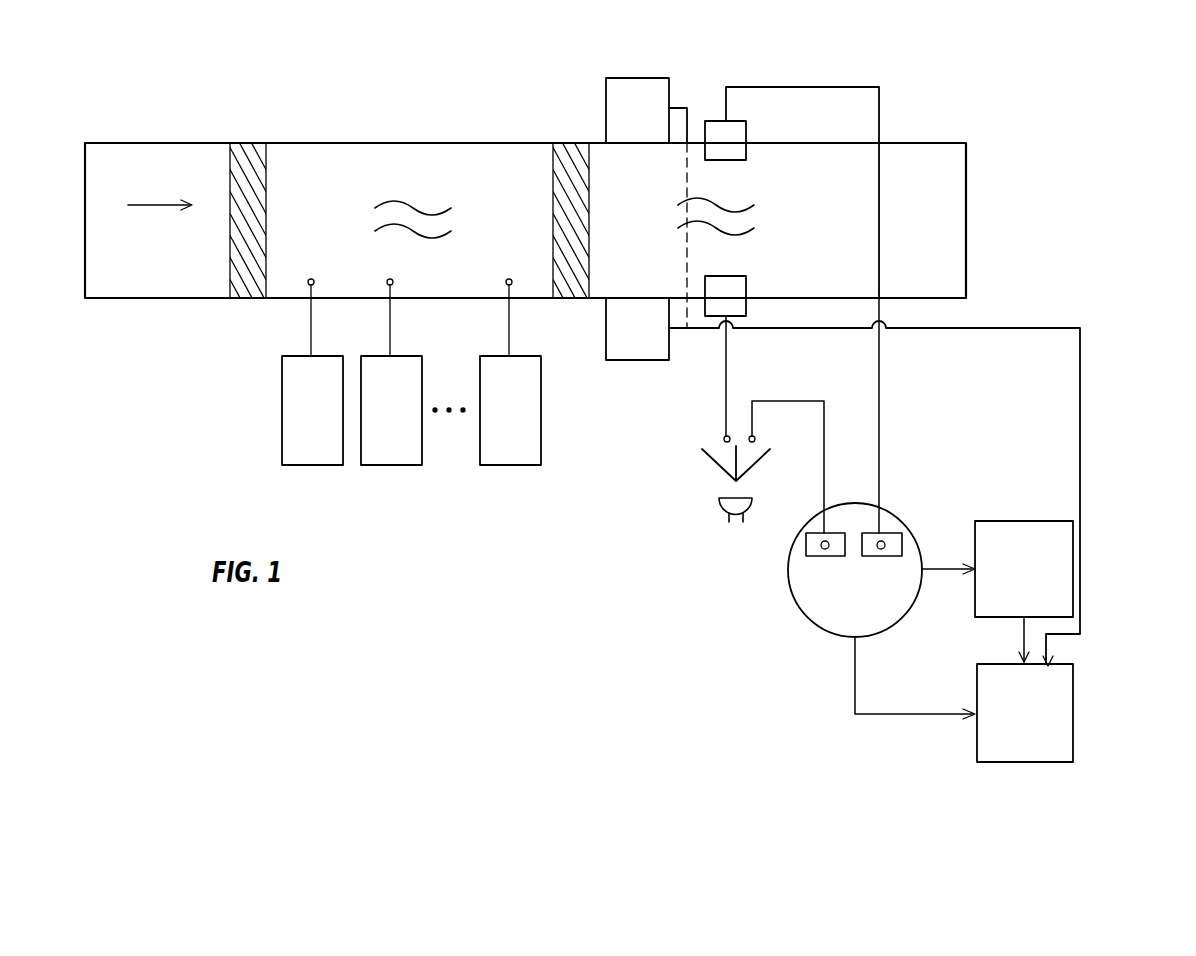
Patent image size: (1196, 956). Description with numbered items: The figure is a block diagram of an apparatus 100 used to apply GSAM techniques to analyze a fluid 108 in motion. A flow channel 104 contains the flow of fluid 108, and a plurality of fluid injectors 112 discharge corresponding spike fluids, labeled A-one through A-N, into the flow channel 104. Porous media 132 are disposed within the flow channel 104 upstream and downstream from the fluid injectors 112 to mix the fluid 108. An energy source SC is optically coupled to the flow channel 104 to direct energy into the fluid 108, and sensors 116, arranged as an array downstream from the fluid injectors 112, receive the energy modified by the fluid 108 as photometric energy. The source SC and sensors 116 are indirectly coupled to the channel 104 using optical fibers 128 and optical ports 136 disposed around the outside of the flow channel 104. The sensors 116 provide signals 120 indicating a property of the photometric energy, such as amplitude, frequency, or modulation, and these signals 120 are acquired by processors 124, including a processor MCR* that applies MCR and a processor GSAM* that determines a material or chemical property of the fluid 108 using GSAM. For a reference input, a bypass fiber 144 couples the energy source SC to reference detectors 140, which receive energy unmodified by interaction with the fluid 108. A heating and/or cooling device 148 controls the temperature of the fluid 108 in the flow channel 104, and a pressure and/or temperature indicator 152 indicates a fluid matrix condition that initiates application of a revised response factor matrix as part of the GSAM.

The apparatus 100 is at (150, 92).
The flow channel 104 is at (932, 143).
The fluid 108 is at (399, 197).
The fluid injectors 112 is at (543, 475).
The sensors 116 is at (894, 518).
The signals 120 is at (935, 572).
The processors 124 is at (1092, 519).
The optical fibers 128 is at (728, 372).
The porous media 132 is at (245, 143).
The optical ports 136 is at (748, 129).
The reference detectors 140 is at (821, 532).
The bypass fiber 144 is at (790, 400).
The heating and/or cooling devices 148 is at (629, 78).
The pressure and/or temperature indicators 152 is at (633, 360).